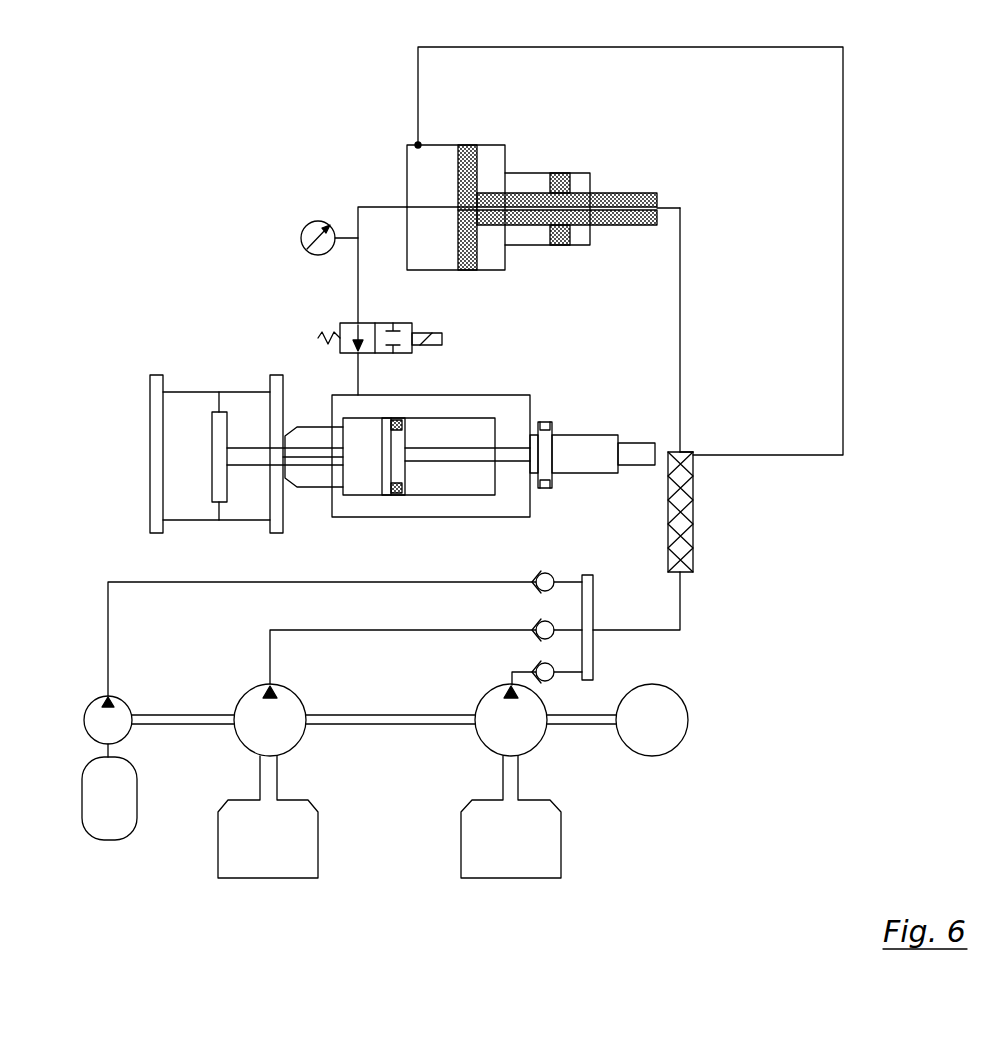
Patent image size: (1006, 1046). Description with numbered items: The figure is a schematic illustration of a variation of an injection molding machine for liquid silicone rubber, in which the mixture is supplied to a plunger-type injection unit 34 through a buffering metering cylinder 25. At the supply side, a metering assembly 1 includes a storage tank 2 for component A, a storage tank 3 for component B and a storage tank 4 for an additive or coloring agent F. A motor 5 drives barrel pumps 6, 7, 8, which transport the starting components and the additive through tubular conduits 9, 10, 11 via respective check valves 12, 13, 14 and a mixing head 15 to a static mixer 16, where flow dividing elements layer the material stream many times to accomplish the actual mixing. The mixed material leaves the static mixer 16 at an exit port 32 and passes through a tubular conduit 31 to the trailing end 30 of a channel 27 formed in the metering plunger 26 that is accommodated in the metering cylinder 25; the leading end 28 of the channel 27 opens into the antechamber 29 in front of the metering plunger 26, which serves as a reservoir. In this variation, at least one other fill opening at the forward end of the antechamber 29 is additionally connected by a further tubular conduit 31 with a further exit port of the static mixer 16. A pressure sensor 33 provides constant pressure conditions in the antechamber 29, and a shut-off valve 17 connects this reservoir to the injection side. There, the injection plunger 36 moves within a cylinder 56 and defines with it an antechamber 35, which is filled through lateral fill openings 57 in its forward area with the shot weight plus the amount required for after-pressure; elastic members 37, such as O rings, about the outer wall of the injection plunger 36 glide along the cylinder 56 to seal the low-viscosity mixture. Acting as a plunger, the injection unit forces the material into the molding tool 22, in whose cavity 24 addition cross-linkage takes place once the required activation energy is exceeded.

The metering assembly 1 is at (715, 783).
The storage tank 2 is at (273, 868).
The storage tank 3 is at (524, 868).
The storage tank 4 is at (107, 838).
The motor 5 is at (655, 745).
The barrel pump 6 is at (500, 742).
The barrel pump 7 is at (255, 730).
The barrel pump 8 is at (102, 727).
The tubular conduit 9 is at (525, 669).
The tubular conduit 10 is at (292, 632).
The tubular conduit 11 is at (118, 582).
The check valve 12 is at (552, 682).
The check valve 13 is at (539, 621).
The check valve 14 is at (553, 571).
The mixing head 15 is at (588, 592).
The static mixer 16 is at (683, 500).
The shut-off valve 17 is at (402, 353).
The molding tool 22 is at (223, 362).
The cavity 24 is at (218, 458).
The metering cylinder 25 is at (560, 148).
The metering plunger 26 is at (607, 205).
The channel 27 is at (540, 245).
The leading end 28 is at (456, 205).
The antechamber 29 is at (422, 197).
The trailing end 30 is at (661, 208).
The tubular conduit 31 is at (680, 296).
The exit port 32 is at (680, 450).
The pressure sensor 33 is at (300, 233).
The plunger-type injection unit 34 is at (530, 375).
The antechamber 35 is at (360, 473).
The injection plunger 36 is at (438, 453).
The elastic members 37 is at (397, 492).
The cylinder 56 is at (520, 497).
The lateral fill openings 57 is at (358, 400).